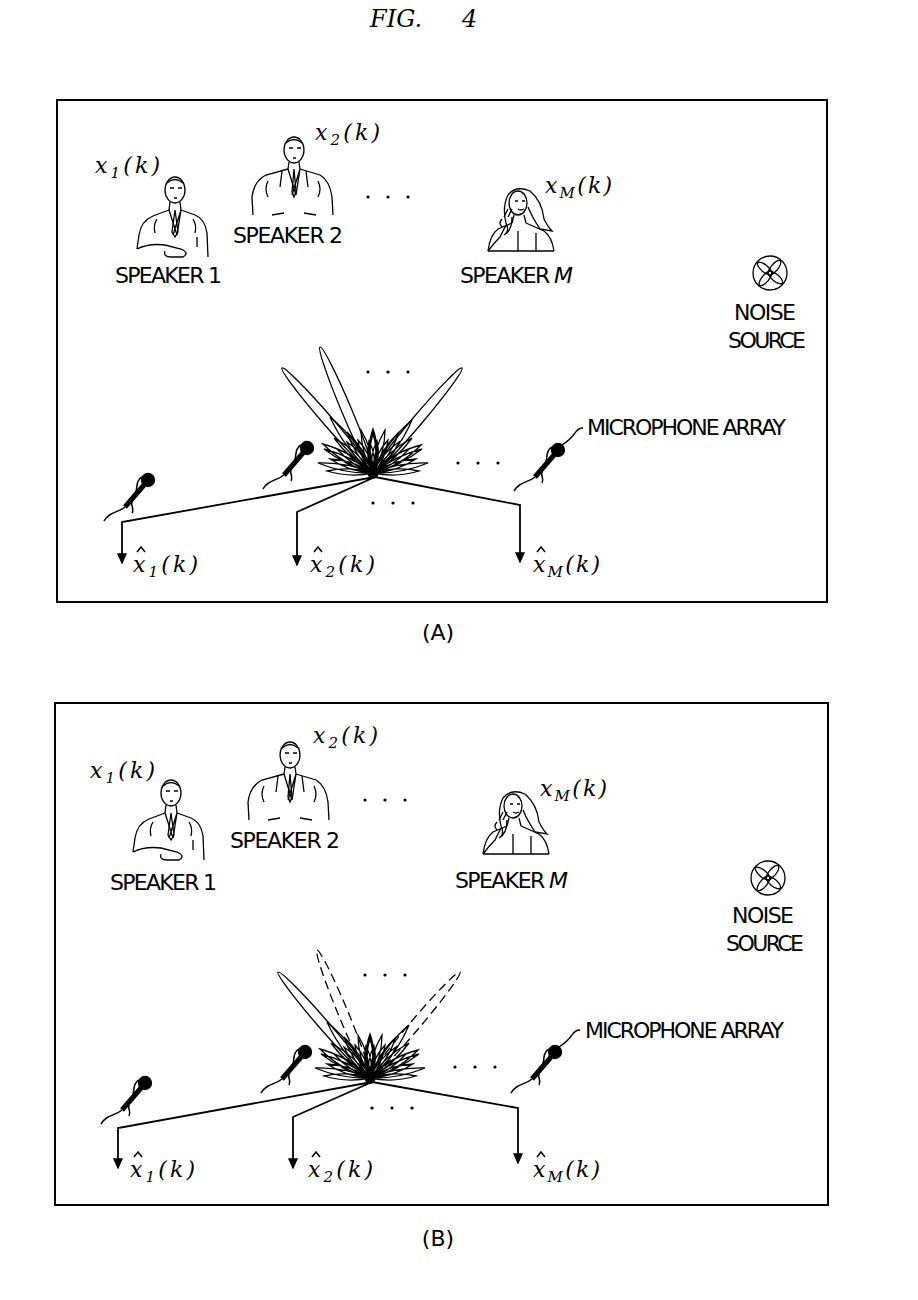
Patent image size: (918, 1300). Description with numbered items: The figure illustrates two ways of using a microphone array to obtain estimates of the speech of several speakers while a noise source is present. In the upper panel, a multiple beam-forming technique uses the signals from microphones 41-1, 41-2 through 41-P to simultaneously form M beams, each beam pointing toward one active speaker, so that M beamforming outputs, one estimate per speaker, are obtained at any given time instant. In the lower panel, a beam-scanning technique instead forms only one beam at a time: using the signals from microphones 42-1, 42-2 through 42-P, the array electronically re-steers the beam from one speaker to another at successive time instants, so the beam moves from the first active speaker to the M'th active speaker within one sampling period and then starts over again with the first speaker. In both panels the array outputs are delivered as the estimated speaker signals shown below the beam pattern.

The microphone 41-1 is at (123, 485).
The microphone 41-2 is at (278, 452).
The microphone 41-P is at (563, 465).
The microphone 42-1 is at (119, 1088).
The microphone 42-2 is at (276, 1055).
The microphone 42-P is at (560, 1070).